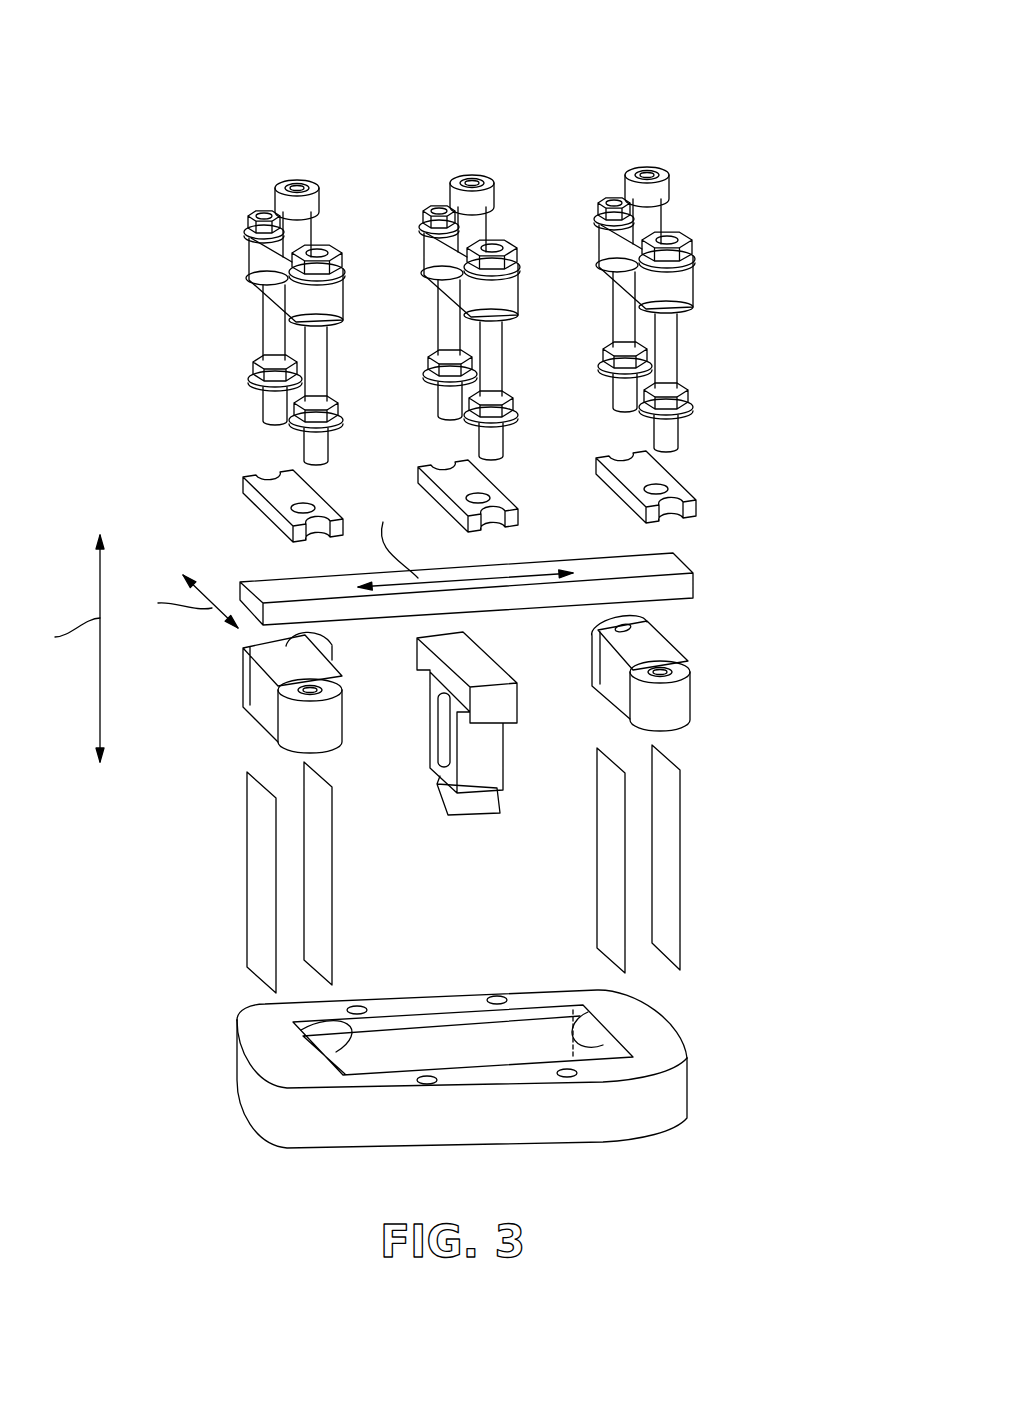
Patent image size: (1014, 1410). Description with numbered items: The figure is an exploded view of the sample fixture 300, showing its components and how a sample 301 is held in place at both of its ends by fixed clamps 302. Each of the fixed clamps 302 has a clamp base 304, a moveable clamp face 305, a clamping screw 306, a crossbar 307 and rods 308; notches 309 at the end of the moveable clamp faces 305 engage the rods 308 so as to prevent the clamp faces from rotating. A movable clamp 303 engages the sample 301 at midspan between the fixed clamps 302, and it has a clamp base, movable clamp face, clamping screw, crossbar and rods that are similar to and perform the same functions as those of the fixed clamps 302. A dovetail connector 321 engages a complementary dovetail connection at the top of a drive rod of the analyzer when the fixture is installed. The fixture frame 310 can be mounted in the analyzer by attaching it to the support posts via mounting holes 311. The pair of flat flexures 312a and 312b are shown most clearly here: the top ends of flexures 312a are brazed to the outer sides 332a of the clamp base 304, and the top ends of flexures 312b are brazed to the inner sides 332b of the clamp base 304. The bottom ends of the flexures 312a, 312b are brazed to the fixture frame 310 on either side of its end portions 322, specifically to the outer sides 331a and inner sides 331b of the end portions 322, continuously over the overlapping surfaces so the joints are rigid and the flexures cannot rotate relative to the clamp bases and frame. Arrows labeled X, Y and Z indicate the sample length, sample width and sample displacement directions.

The sample fixture 300 is at (446, 604).
The sample 301 is at (695, 565).
The fixed clamps 302 is at (700, 273).
The movable clamp 303 is at (429, 147).
The clamp base 304 is at (697, 698).
The moveable clamp face 305 is at (260, 513).
The clamping screw 306 is at (675, 169).
The crossbar 307 is at (630, 215).
The rods 308 is at (263, 330).
The notches 309 is at (690, 530).
The fixture frame 310 is at (495, 1068).
The mounting holes 311 is at (570, 1073).
The flexures 312a is at (253, 882).
The flexures 312b is at (330, 880).
The dovetail connector 321 is at (475, 815).
The end portions 322 is at (268, 1097).
The outer sides 331a is at (262, 1077).
The inner sides 331b is at (305, 1030).
The outer sides 332a is at (260, 715).
The inner sides 332b is at (253, 660).